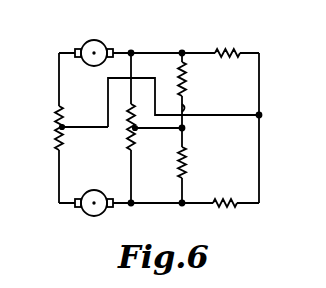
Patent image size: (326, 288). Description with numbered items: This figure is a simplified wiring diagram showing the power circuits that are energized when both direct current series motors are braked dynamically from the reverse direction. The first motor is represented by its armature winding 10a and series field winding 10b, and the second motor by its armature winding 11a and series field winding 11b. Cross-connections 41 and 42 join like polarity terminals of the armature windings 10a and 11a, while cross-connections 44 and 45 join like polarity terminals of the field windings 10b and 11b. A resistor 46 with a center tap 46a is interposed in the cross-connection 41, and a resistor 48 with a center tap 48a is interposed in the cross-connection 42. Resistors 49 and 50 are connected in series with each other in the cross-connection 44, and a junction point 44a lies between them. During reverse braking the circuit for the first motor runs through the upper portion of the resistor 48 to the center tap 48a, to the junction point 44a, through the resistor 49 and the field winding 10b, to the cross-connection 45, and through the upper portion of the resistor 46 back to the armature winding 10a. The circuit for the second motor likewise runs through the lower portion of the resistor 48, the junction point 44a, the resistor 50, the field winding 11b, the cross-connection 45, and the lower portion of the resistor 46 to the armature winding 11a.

The armature winding 10a is at (90, 41).
The series field winding 10b is at (227, 47).
The armature winding 11a is at (91, 218).
The series field winding 11b is at (226, 208).
The cross-connection 41 is at (57, 80).
The cross-connection 42 is at (132, 68).
The cross-connection 44 is at (185, 103).
The junction point 44a is at (185, 128).
The cross-connection 45 is at (259, 88).
The resistor 46 is at (56, 110).
The center tap 46a is at (63, 128).
The resistor 48 is at (126, 143).
The center tap 48a is at (136, 129).
The resistor 49 is at (187, 80).
The resistor 50 is at (186, 163).